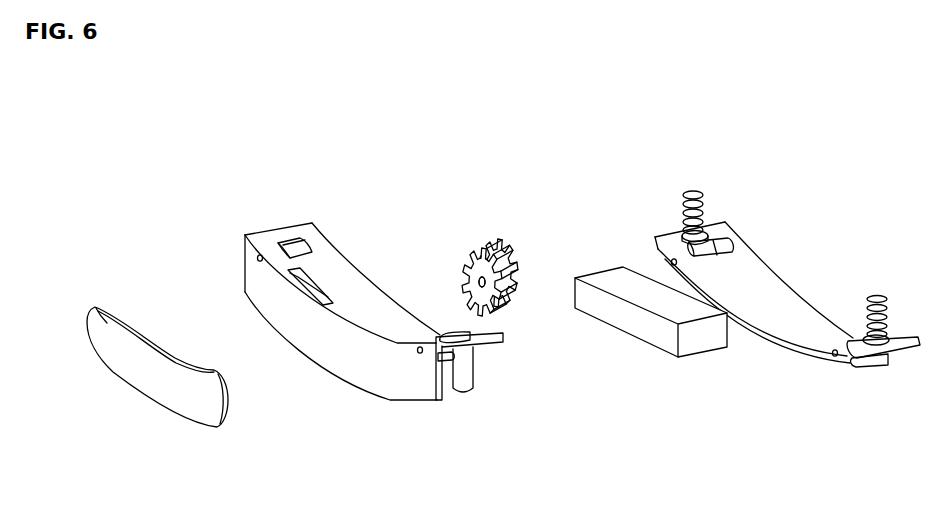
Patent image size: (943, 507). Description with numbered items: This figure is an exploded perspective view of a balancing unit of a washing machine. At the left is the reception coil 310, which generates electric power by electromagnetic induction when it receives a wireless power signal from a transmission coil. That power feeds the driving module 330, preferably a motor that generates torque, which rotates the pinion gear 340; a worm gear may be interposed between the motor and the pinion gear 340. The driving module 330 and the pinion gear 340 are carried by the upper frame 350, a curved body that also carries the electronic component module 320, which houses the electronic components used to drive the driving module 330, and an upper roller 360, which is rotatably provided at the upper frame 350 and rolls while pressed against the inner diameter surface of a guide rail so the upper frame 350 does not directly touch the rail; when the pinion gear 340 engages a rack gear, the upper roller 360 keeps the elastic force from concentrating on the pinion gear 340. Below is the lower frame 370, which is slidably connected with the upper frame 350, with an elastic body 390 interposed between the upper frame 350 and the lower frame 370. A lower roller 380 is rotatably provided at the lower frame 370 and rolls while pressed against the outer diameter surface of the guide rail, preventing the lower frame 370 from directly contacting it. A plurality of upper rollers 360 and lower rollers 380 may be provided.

The reception coil 310 is at (100, 322).
The electronic component module 320 is at (640, 315).
The driving module 330 is at (491, 240).
The pinion gear 340 is at (465, 280).
The upper frame 350 is at (377, 378).
The upper roller 360 is at (290, 240).
The lower frame 370 is at (778, 310).
The lower roller 380 is at (727, 237).
The elastic body 390 is at (688, 192).